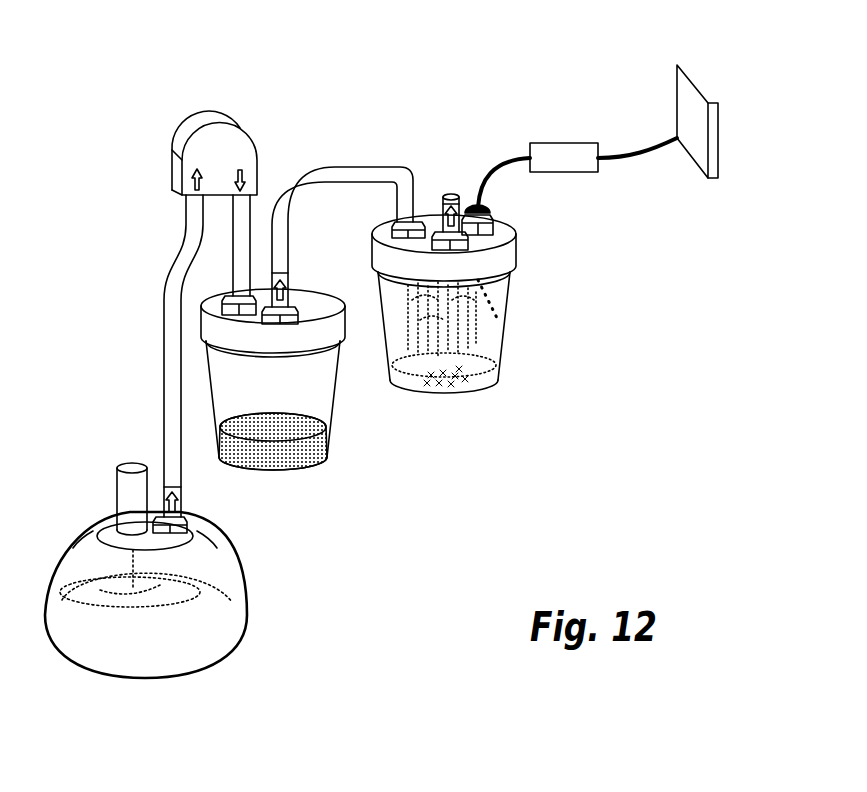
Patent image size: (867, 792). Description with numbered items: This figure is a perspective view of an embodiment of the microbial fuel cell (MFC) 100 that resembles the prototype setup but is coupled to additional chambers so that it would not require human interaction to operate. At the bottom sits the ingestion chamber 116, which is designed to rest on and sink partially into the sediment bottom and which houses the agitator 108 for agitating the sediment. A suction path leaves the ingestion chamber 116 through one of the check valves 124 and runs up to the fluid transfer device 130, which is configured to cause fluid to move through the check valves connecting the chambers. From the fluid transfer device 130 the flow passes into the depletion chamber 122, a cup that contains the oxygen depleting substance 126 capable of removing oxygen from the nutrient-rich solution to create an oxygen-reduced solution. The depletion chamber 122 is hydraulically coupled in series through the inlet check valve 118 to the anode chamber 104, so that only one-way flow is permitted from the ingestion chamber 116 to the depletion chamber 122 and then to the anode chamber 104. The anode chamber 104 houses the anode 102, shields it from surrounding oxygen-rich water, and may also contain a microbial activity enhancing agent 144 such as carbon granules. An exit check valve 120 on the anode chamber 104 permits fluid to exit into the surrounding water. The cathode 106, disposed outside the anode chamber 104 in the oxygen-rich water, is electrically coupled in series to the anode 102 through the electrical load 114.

The microbial fuel cell 100 is at (118, 68).
The anode 102 is at (483, 328).
The anode chamber 104 is at (485, 322).
The cathode 106 is at (675, 101).
The agitator 108 is at (165, 603).
The electrical load 114 is at (568, 143).
The ingestion chamber 116 is at (245, 572).
The inlet check valve 118 is at (295, 297).
The exit check valve 120 is at (450, 196).
The depletion chamber 122 is at (303, 379).
The check valves 124 is at (183, 490).
The oxygen depleting substance 126 is at (277, 412).
The fluid transfer device 130 is at (248, 130).
The microbial activity enhancing agent 144 is at (462, 378).